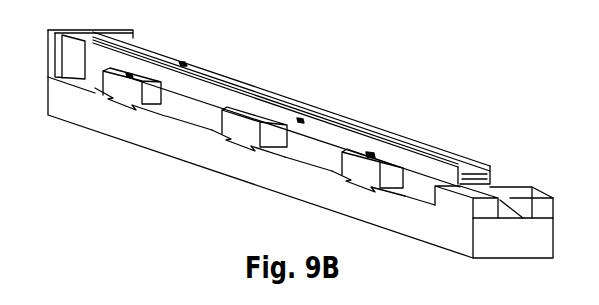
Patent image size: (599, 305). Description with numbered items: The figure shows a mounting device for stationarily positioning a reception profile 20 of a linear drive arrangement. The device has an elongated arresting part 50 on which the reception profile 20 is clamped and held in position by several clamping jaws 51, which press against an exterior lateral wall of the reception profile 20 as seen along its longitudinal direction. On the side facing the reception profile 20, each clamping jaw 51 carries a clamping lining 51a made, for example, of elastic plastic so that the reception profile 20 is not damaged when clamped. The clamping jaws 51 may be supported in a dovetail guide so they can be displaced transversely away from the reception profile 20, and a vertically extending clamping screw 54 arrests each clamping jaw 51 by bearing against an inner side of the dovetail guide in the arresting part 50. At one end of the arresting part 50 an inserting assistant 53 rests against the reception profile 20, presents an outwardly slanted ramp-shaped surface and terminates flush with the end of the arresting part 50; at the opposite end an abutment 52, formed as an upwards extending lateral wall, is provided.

The reception profile 20 is at (412, 140).
The arresting part 50 is at (143, 148).
The clamping jaws 51 is at (360, 170).
The clamping lining 51a is at (403, 189).
The abutment 52 is at (140, 39).
The inserting assistant 53 is at (520, 203).
The clamping screw 54 is at (370, 153).